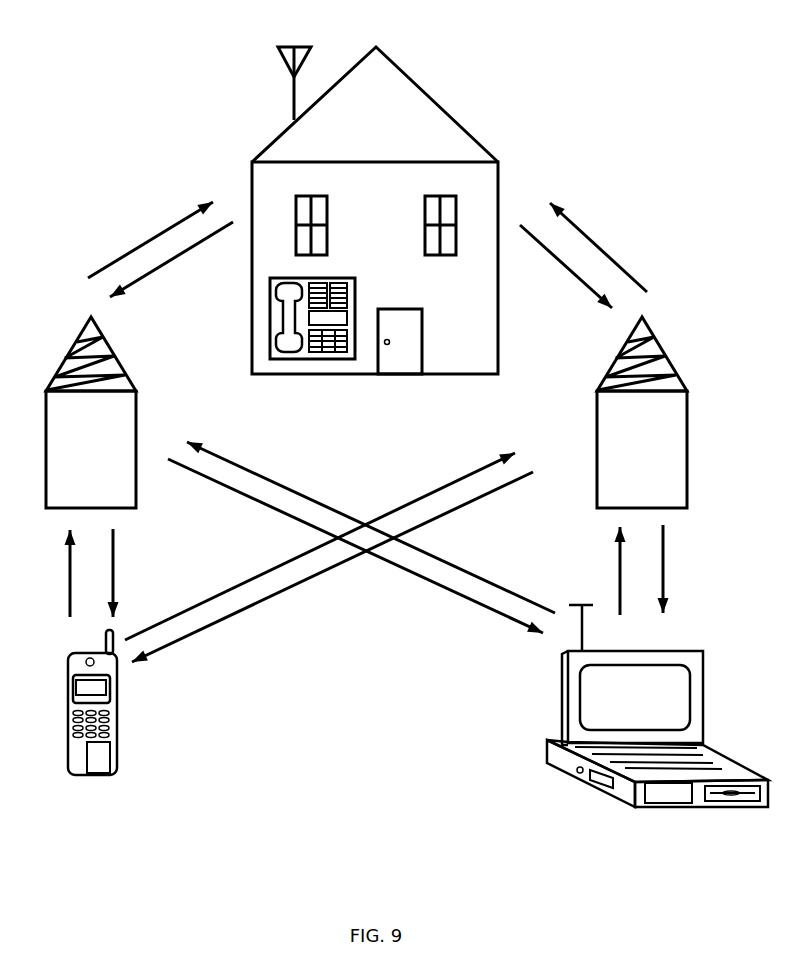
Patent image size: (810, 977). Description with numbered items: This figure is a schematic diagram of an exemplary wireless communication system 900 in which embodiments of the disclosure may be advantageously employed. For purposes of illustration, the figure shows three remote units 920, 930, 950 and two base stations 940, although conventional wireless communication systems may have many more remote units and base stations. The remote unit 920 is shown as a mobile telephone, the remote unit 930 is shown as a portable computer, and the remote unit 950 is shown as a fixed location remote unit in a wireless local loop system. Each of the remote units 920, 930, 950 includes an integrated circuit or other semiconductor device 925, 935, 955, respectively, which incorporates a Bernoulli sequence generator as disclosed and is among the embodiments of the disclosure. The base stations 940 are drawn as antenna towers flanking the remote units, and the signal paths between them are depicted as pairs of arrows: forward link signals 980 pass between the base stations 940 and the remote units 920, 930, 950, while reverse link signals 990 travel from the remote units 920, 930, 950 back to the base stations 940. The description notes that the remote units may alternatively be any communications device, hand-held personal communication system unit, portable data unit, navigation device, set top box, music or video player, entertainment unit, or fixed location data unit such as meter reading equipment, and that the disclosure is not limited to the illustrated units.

The wireless communication system 900 is at (108, 85).
The remote unit 920 is at (71, 662).
The integrated circuit or other semiconductor device 925 is at (100, 760).
The remote unit 930 is at (683, 650).
The integrated circuit or other semiconductor device 935 is at (675, 793).
The base station 940 is at (70, 352).
The remote unit 950 is at (270, 327).
The integrated circuit or other semiconductor device 955 is at (337, 318).
The forward link signal 980 is at (155, 235).
The reverse link signal 990 is at (158, 270).